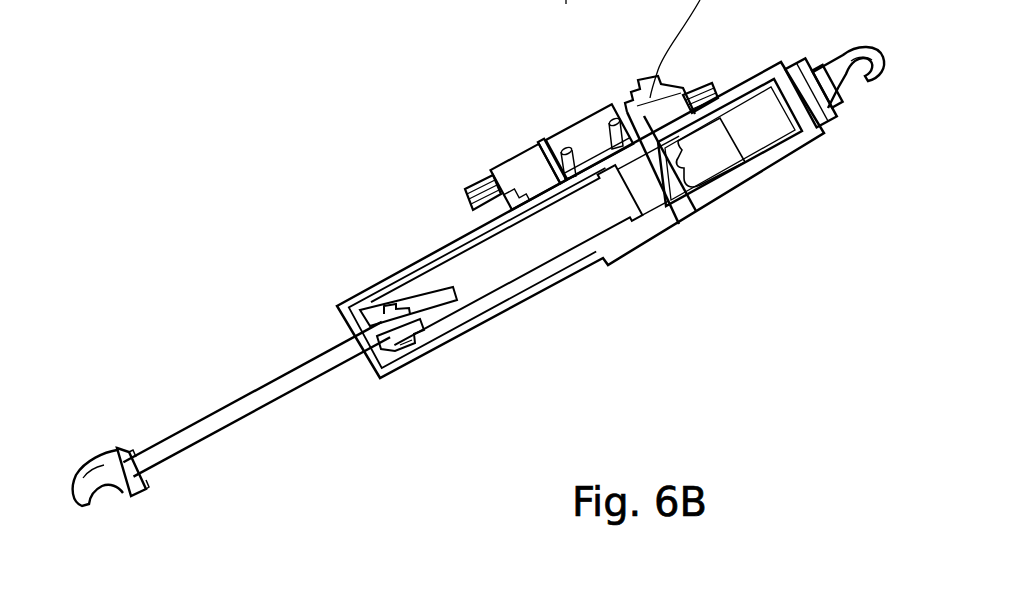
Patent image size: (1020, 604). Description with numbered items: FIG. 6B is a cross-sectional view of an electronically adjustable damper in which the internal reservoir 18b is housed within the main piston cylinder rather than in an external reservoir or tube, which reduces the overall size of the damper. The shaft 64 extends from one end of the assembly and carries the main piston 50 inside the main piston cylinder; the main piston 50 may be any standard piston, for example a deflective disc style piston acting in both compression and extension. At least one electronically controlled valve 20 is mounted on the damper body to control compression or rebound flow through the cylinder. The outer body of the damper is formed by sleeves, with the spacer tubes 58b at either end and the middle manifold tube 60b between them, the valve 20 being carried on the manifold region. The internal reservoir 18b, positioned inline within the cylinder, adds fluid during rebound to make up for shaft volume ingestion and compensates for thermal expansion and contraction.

The shaft 64 is at (207, 433).
The housing 58b is at (407, 268).
The carriage 60b is at (647, 243).
The main piston 50 is at (414, 339).
The electronically controlled valve 20 is at (527, 166).
The internal reservoir 18b is at (752, 121).